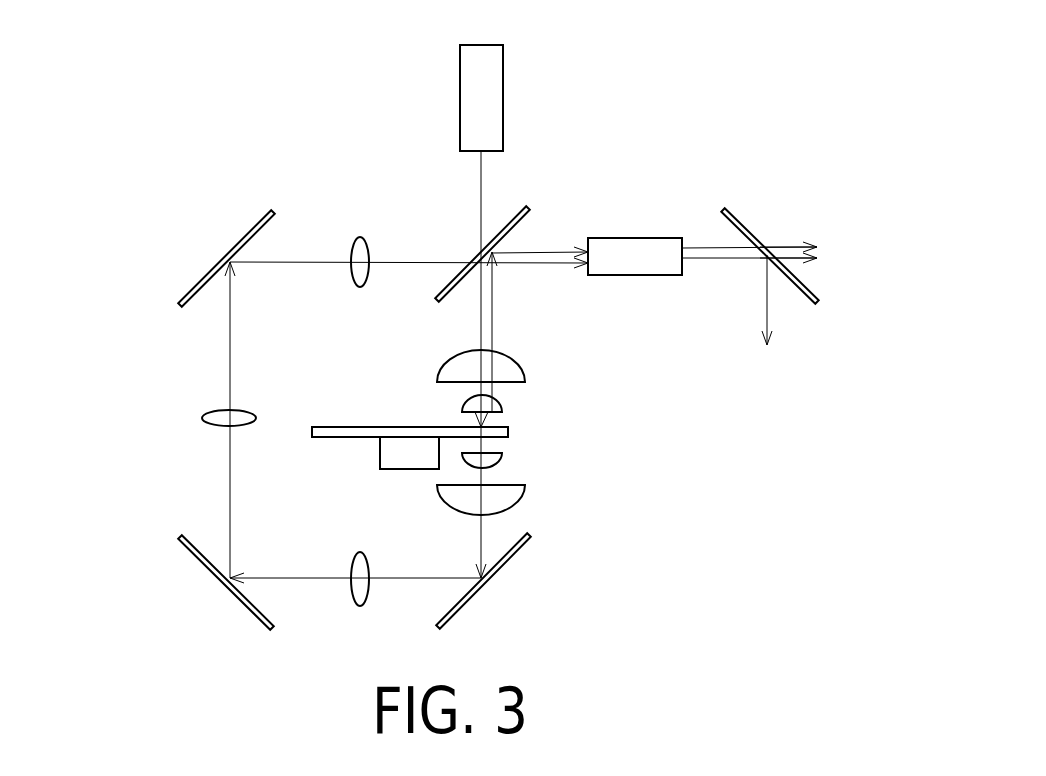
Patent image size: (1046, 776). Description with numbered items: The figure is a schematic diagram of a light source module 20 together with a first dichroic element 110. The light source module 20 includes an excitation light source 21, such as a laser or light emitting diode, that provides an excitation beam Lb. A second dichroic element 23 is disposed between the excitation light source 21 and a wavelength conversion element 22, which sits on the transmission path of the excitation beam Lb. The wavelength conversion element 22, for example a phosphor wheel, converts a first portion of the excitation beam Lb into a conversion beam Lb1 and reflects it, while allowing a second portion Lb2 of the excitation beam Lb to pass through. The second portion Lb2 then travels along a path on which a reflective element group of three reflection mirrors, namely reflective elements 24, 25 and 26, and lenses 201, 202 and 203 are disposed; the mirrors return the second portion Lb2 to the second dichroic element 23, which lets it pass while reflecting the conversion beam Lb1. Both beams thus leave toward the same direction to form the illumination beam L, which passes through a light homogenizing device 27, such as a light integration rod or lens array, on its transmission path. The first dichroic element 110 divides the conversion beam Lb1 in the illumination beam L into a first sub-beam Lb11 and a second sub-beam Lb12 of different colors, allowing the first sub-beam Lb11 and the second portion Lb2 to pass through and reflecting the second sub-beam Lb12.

The light source module 20 is at (647, 120).
The excitation light source 21 is at (487, 91).
The wavelength conversion element 22 is at (388, 453).
The second dichroic element 23 is at (530, 218).
The reflective element 24 is at (515, 553).
The reflective element 25 is at (253, 612).
The reflective element 26 is at (190, 293).
The light homogenizing device 27 is at (633, 277).
The first dichroic element 110 is at (733, 217).
The lens 201 is at (362, 595).
The lens 202 is at (205, 415).
The lens 203 is at (358, 240).
The illumination beam L is at (552, 268).
The excitation beam Lb is at (480, 195).
The conversion beam Lb1 is at (492, 317).
The second portion of the excitation beam Lb2 is at (797, 260).
The first sub-beam Lb11 is at (788, 247).
The second sub-beam Lb12 is at (768, 307).